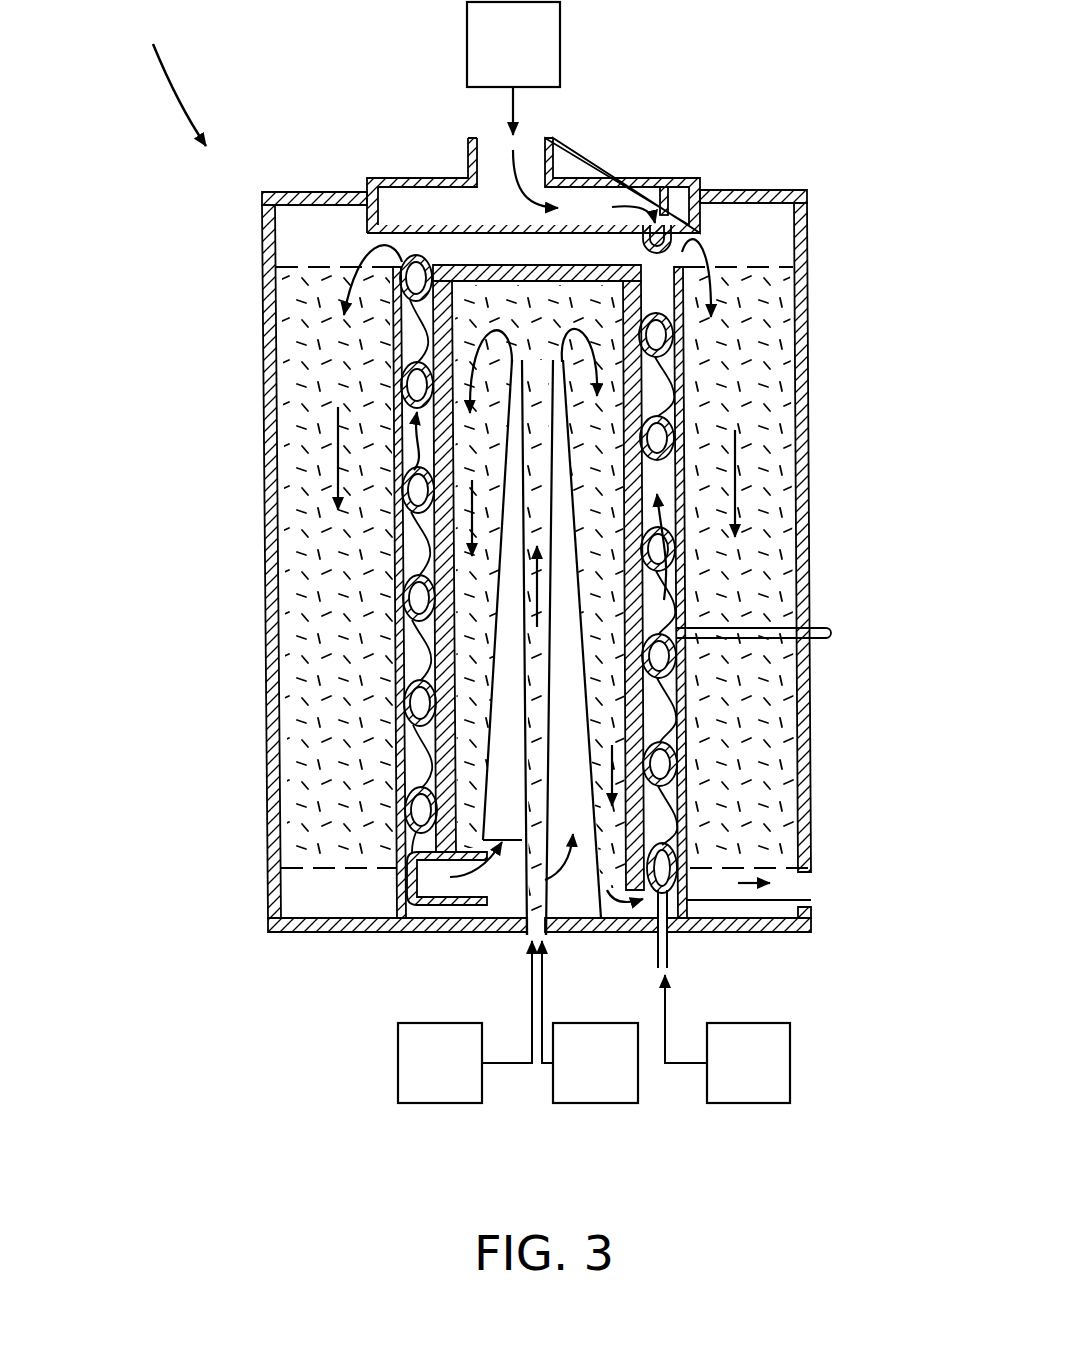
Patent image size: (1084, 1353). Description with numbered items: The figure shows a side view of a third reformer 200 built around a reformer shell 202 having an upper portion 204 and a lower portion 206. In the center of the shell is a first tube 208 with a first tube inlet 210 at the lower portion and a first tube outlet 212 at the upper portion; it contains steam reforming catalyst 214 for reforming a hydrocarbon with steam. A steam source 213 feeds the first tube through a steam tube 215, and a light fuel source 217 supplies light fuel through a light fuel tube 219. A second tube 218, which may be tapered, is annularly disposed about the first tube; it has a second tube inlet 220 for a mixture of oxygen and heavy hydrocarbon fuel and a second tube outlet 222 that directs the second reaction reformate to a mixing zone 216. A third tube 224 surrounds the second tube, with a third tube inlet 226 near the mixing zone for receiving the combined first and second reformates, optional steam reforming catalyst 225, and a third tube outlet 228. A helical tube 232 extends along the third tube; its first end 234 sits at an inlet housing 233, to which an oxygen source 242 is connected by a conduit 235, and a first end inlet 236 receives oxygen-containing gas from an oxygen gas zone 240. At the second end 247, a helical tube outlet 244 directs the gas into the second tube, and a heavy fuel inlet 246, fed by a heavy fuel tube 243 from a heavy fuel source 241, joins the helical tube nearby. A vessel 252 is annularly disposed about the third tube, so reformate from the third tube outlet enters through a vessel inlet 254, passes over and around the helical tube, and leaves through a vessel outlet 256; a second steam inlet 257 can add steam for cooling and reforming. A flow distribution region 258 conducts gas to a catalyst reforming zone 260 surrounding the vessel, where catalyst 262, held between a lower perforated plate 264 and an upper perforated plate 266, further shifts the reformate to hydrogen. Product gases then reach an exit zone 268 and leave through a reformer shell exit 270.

The third reformer 200 is at (164, 75).
The reformer shell 202 is at (267, 520).
The upper portion 204 is at (288, 192).
The lower portion 206 is at (278, 934).
The first tube 208 is at (715, 840).
The first tube inlet 210 is at (546, 936).
The first tube outlet 212 is at (535, 360).
The steam source 213 is at (412, 1082).
The steam reforming catalyst 214 is at (540, 745).
The steam tube 215 is at (505, 1064).
The mixing zone 216 is at (475, 290).
The light fuel source 217 is at (567, 1082).
The second tube 218 is at (598, 708).
The light fuel tube 219 is at (547, 1064).
The second tube inlet 220 is at (480, 887).
The second tube outlet 222 is at (600, 300).
The third tube 224 is at (645, 483).
The steam reforming catalyst 225 is at (484, 660).
The third tube inlet 226 is at (597, 300).
The third tube outlet 228 is at (410, 870).
The helical tube 232 is at (687, 393).
The inlet housing 233 is at (528, 137).
The first end 234 is at (664, 232).
The conduit 235 is at (510, 112).
The first end inlet 236 is at (656, 222).
The oxygen gas zone 240 is at (393, 203).
The heavy fuel source 241 is at (720, 1082).
The oxygen source 242 is at (543, 64).
The heavy fuel tube 243 is at (687, 1064).
The helical tube outlet 244 is at (491, 887).
The heavy fuel inlet 246 is at (668, 900).
The second end 247 is at (425, 902).
The vessel 252 is at (392, 452).
The vessel inlet 254 is at (777, 932).
The vessel outlet 256 is at (680, 242).
The second steam inlet 257 is at (830, 630).
The flow distribution region 258 is at (292, 225).
The catalyst reforming zone 260 is at (293, 386).
The catalyst 262 is at (302, 600).
The lower perforated plate 264 is at (318, 865).
The upper perforated plate 266 is at (300, 285).
The exit zone 268 is at (308, 905).
The reformer shell exit 270 is at (814, 875).